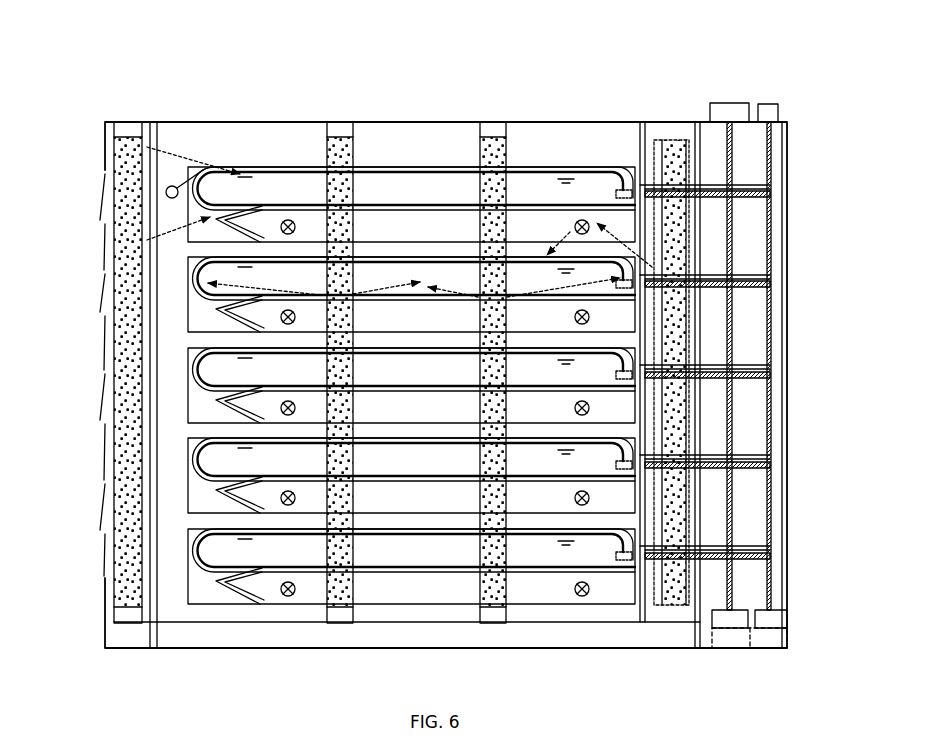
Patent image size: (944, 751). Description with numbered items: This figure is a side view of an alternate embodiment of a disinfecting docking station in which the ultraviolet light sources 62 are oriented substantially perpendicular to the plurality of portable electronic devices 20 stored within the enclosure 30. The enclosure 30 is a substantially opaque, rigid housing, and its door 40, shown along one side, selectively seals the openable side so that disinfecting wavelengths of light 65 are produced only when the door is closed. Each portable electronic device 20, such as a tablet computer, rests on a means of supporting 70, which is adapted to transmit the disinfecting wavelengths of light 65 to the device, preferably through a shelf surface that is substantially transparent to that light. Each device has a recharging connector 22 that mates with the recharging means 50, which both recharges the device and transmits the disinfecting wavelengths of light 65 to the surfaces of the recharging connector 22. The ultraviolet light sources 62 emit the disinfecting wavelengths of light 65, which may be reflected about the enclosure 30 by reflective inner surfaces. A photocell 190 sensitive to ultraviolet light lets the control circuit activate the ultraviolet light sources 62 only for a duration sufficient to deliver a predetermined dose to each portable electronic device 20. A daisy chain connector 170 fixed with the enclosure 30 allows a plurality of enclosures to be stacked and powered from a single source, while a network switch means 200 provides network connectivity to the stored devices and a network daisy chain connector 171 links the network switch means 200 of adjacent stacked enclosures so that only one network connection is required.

The portable electronic device 20 is at (213, 367).
The recharging connector 22 is at (630, 187).
The enclosure 30 is at (652, 650).
The door 40 is at (104, 172).
The recharging means 50 is at (733, 614).
The ultraviolet light source 62 is at (128, 170).
The disinfecting wavelengths of light 65 is at (190, 160).
The means of supporting 70 is at (253, 587).
The daisy chain connector 170 is at (735, 103).
The network daisy chain connector 171 is at (770, 104).
The photocell 190 is at (203, 170).
The network switch means 200 is at (773, 616).